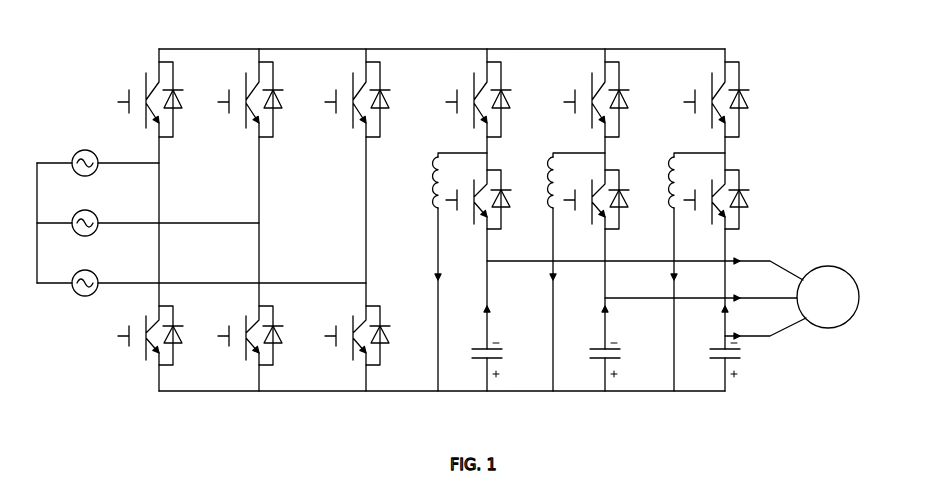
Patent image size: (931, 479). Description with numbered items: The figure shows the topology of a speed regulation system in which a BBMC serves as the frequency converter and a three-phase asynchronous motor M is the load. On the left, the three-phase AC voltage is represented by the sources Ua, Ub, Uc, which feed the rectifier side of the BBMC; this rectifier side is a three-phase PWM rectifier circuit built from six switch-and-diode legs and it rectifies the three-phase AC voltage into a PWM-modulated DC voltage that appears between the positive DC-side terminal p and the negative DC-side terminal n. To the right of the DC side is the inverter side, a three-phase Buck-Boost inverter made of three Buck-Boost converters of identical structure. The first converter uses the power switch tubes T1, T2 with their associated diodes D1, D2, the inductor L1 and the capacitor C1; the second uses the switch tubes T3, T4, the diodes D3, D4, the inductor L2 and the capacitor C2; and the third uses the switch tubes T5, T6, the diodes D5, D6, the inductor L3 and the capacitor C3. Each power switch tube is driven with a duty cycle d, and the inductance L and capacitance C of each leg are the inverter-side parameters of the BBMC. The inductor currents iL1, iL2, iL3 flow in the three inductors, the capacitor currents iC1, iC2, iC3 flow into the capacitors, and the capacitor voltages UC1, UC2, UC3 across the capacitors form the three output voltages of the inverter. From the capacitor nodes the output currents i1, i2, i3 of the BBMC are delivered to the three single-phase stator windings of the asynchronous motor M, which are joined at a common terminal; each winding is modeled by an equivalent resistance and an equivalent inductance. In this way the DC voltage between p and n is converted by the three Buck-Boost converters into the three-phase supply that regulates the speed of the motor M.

The positive DC-side terminal p is at (442, 37).
The negative DC-side terminal n is at (442, 380).
The phase-A AC voltage source Ua is at (98, 154).
The phase-B AC voltage source Ub is at (148, 213).
The phase-C AC voltage source Uc is at (201, 273).
The power switch tube T1 is at (473, 109).
The power switch tube T2 is at (473, 258).
The power switch tube T3 is at (591, 109).
The power switch tube T4 is at (591, 259).
The power switch tube T5 is at (711, 109).
The power switch tube T6 is at (711, 259).
The freewheeling diode of T1 D1 is at (507, 90).
The freewheeling diode of T2 D2 is at (507, 190).
The freewheeling diode of T3 D3 is at (625, 90).
The freewheeling diode of T4 D4 is at (625, 190).
The freewheeling diode of T5 D5 is at (745, 90).
The freewheeling diode of T6 D6 is at (745, 190).
The inductor L1 is at (447, 272).
The inductor L2 is at (564, 272).
The inductor L3 is at (685, 272).
The capacitor C1 is at (473, 369).
The capacitor C2 is at (591, 369).
The capacitor C3 is at (711, 370).
The capacitor voltage UC1 is at (512, 360).
The capacitor voltage UC2 is at (630, 360).
The capacitor voltage UC3 is at (750, 360).
The inductor current iL1 is at (423, 277).
The inductor current iL2 is at (536, 277).
The inductor current iL3 is at (657, 277).
The capacitor current of C1 iC1 is at (472, 316).
The capacitor current of C2 iC2 is at (590, 316).
The capacitor current of C3 iC3 is at (711, 316).
The output current i1 is at (645, 260).
The output current i2 is at (701, 289).
The output current i3 is at (765, 327).
The three-phase asynchronous motor M is at (828, 297).